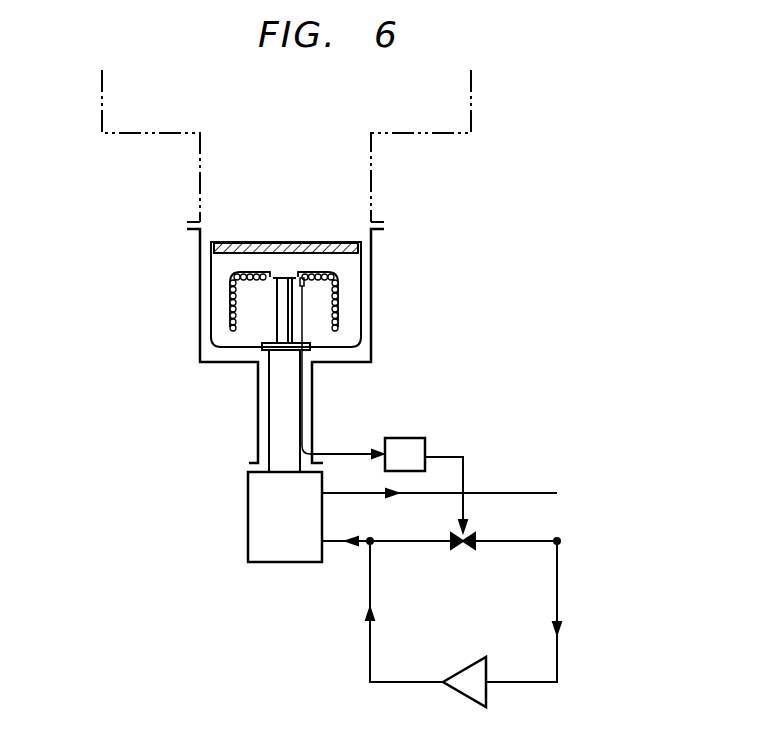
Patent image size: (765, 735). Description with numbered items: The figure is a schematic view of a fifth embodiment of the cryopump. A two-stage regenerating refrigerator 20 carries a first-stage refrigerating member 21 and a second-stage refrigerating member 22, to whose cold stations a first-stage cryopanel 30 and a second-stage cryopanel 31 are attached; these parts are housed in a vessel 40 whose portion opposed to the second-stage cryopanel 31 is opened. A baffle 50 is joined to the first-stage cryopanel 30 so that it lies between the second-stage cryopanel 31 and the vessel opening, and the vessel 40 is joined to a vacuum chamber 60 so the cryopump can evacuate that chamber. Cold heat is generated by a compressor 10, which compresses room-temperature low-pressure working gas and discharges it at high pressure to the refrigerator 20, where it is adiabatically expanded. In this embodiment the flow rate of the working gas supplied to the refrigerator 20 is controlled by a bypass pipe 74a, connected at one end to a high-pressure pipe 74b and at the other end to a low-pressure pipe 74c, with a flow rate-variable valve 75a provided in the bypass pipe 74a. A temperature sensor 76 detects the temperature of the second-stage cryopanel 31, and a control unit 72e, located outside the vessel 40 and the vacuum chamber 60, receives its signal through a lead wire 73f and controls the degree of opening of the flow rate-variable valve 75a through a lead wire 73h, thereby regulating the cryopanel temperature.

The compressor 10 is at (487, 685).
The two-stage regenerating refrigerator 20 is at (221, 470).
The first-stage refrigerating member 21 is at (269, 396).
The second-stage refrigerating member 22 is at (280, 307).
The first-stage cryopanel 30 is at (211, 328).
The second-stage cryopanel 31 is at (230, 312).
The vessel 40 is at (200, 282).
The baffle 50 is at (233, 242).
The vacuum chamber 60 is at (471, 108).
The control unit 72e is at (413, 437).
The lead wire 73f is at (349, 454).
The lead wire 73h is at (463, 468).
The bypass pipe 74a is at (419, 543).
The high-pressure pipe 74b is at (370, 629).
The low-pressure pipe 74c is at (557, 570).
The flow rate-variable valve 75a is at (464, 550).
The temperature sensor 76 is at (303, 290).